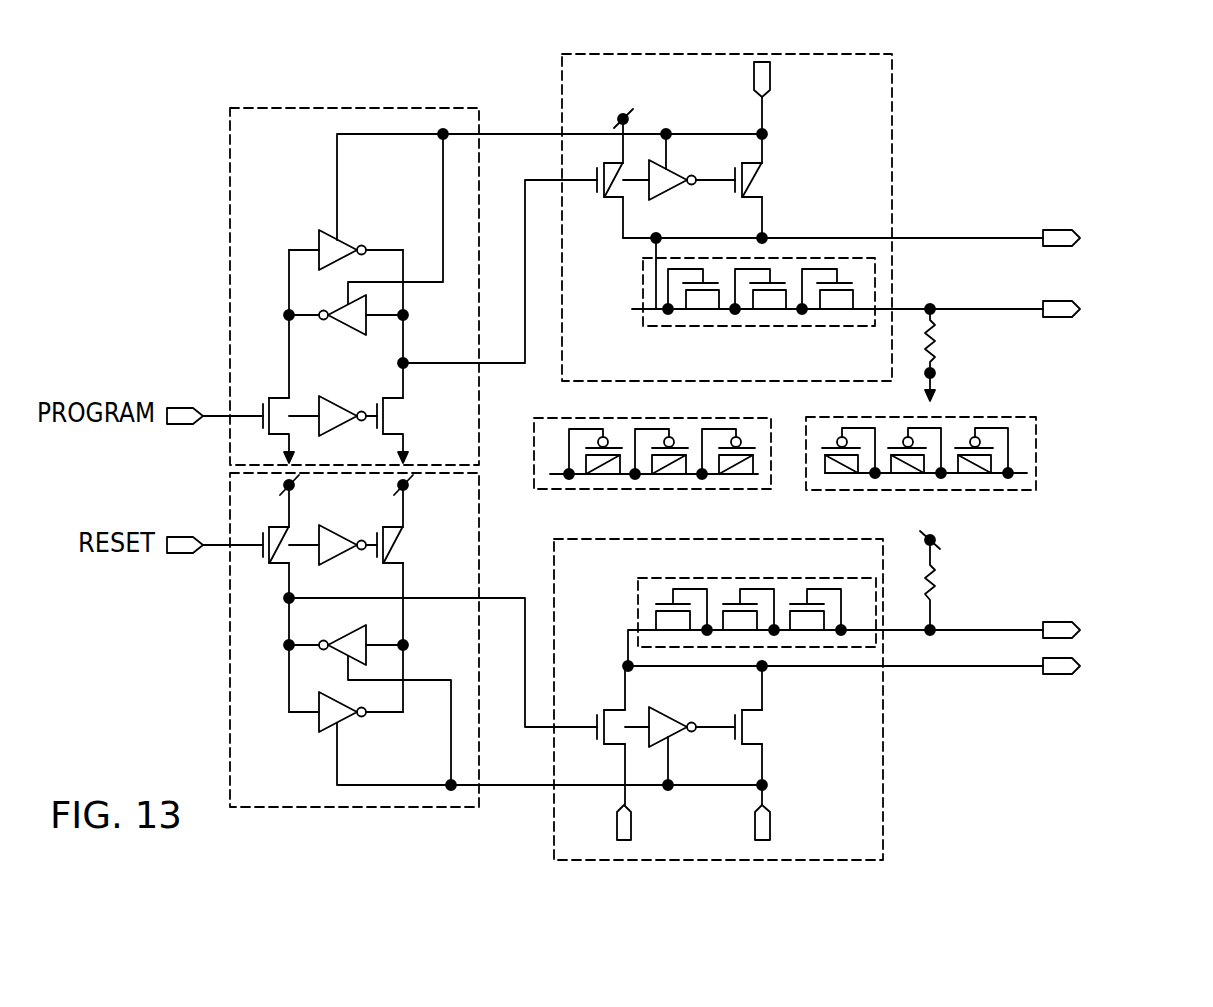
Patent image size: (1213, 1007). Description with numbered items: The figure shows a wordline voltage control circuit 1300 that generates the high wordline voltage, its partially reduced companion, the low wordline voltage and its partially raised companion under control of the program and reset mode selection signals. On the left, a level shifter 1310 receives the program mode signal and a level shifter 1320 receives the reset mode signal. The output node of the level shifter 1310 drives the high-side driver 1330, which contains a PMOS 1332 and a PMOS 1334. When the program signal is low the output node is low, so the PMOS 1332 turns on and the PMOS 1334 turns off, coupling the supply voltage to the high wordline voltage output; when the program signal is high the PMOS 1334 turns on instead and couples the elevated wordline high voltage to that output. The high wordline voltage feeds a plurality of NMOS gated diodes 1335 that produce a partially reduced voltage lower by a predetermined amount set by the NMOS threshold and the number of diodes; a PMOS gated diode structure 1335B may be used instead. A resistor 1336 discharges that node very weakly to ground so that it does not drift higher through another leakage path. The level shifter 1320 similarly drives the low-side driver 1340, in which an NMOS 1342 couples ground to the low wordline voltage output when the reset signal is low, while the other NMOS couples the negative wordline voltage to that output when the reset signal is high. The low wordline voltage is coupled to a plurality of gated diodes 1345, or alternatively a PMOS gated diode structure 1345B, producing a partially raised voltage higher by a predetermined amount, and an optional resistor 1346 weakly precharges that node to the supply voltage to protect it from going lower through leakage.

The word line voltage generation circuit 1300 is at (928, 134).
The level shifter 1310 is at (230, 240).
The level shifter 1320 is at (230, 682).
The high word line voltage driver 1330 is at (562, 108).
The PMOS 1332 is at (612, 200).
The PMOS 1334 is at (748, 200).
The NMOS gated diodes 1335 is at (693, 326).
The PMOS gated diode structure 1335B is at (667, 358).
The resistor 1336 is at (936, 335).
The low word line voltage driver 1340 is at (554, 588).
The NMOS 1342 is at (604, 710).
The gated diodes 1345 is at (730, 578).
The PMOS gated diode structure 1345B is at (737, 563).
The resistor 1346 is at (938, 597).